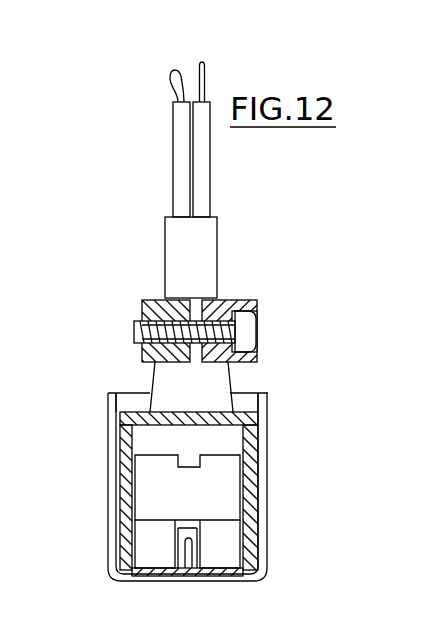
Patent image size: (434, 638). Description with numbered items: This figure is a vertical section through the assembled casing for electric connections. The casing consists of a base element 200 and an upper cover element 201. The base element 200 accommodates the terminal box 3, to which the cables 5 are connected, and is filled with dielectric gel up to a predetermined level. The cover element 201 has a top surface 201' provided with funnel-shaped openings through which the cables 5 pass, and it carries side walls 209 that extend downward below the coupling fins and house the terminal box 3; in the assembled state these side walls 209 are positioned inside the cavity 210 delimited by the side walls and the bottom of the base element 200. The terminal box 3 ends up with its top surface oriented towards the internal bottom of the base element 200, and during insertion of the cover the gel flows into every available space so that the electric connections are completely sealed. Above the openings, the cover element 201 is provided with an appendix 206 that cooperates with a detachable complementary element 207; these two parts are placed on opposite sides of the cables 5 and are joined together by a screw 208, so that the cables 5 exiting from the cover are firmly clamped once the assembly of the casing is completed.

The cables 5 is at (128, 121).
The appendix 206 is at (158, 297).
The complementary element 207 is at (232, 298).
The screw 208 is at (248, 337).
The side walls 209 is at (250, 420).
The base element 200 is at (110, 405).
The cover element 201 is at (142, 509).
The top surface 201' is at (102, 412).
The cavity 210 is at (248, 553).
The terminal box 3 is at (198, 509).